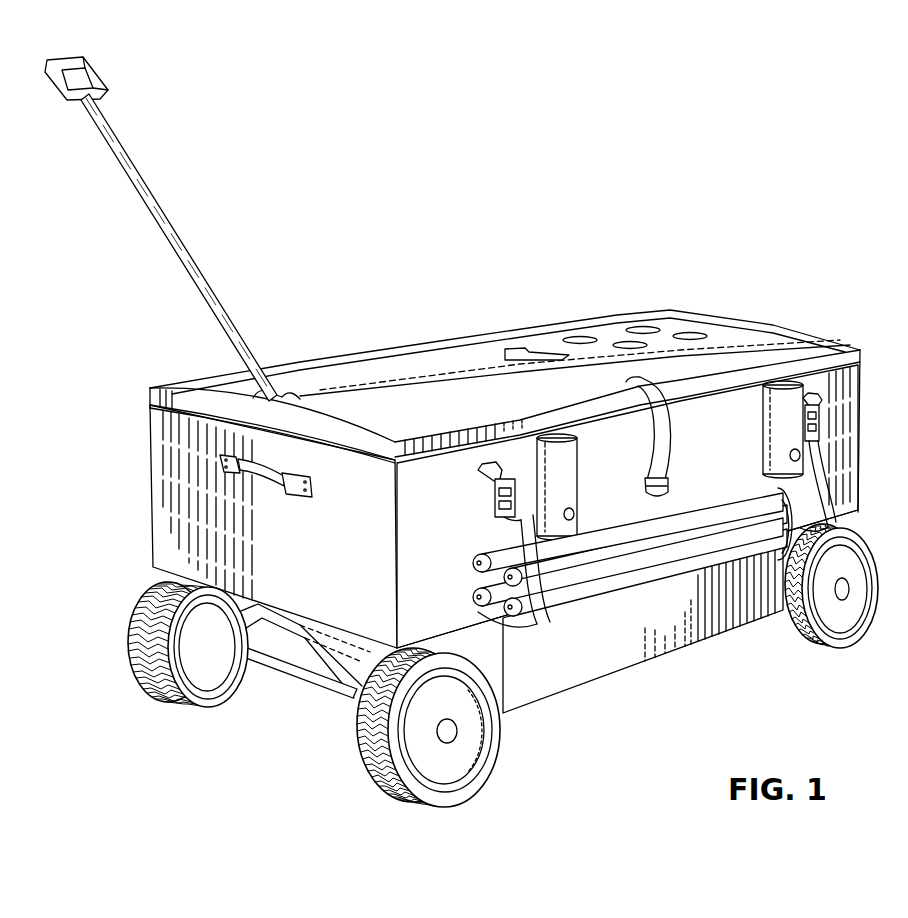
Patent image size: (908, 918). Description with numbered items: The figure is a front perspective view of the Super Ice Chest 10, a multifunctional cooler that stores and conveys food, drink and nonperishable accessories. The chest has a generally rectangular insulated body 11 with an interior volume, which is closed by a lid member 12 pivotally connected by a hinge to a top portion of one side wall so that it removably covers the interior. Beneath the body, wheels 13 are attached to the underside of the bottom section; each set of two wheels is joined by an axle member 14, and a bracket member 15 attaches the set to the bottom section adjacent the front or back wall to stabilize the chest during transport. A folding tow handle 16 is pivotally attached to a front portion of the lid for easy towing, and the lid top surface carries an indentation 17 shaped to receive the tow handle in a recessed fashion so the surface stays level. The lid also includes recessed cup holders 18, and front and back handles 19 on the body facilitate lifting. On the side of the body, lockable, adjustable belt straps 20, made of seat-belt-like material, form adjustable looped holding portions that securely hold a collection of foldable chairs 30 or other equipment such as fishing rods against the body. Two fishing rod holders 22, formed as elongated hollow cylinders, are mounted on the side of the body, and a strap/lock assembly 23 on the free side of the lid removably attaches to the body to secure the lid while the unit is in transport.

The Super Ice Chest 10 is at (822, 212).
The body 11 is at (152, 462).
The lid member 12 is at (585, 317).
The wheels 13 is at (145, 607).
The axle member 14 is at (270, 677).
The bracket member 15 is at (337, 693).
The folding tow handle 16 is at (118, 163).
The indentation 17 is at (510, 350).
The recessed cup holders 18 is at (654, 318).
The front and back handles 19 is at (303, 497).
The belt straps 20 is at (513, 528).
The fishing rod holders 22 is at (792, 377).
The strap/lock assembly 23 is at (672, 426).
The foldable chairs 30 is at (587, 593).